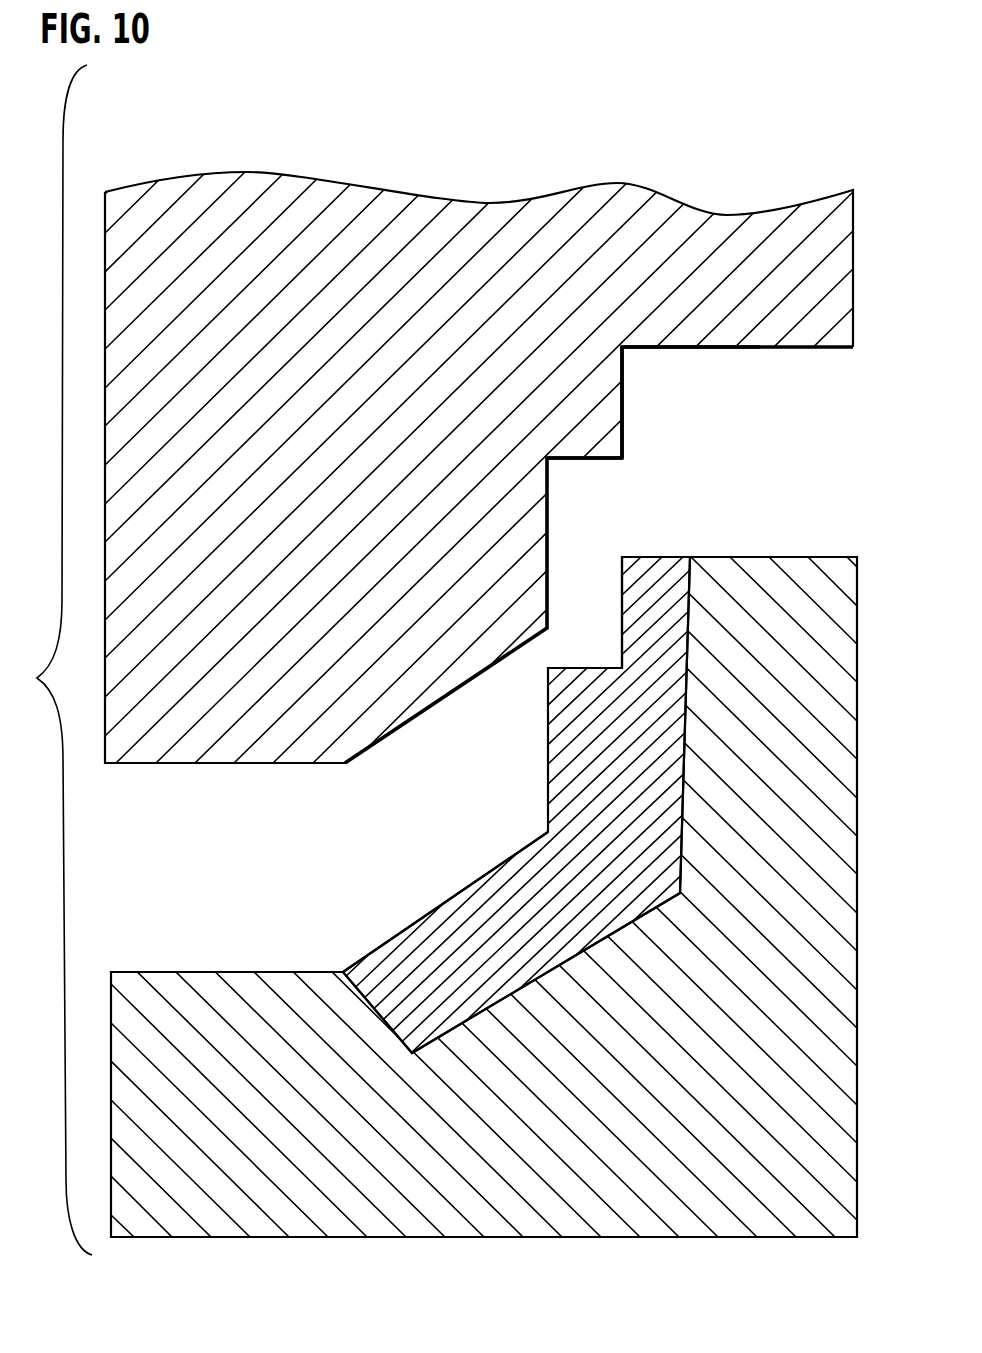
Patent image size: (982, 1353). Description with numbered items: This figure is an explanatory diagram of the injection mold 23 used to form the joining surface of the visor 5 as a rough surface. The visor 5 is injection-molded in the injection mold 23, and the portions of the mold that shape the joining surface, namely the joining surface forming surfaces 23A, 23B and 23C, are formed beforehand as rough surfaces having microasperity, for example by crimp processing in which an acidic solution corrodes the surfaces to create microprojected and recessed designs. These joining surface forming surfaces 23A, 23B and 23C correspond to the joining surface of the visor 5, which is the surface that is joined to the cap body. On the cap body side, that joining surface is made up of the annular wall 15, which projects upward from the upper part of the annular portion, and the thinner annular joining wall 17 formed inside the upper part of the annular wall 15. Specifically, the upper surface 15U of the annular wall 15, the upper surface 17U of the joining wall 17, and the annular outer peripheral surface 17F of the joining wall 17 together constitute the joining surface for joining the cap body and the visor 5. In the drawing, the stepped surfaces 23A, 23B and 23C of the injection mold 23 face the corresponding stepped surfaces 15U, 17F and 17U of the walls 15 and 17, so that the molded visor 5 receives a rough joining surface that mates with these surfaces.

The injection mold 23 is at (551, 154).
The joining surface forming surface 23A is at (633, 355).
The joining surface forming surface 23B is at (632, 403).
The joining surface forming surface 23C is at (553, 467).
The joining wall 17 is at (484, 897).
The upper surface of the joining wall 17U is at (662, 557).
The annular outer peripheral surface of the joining wall 17F is at (623, 605).
The annular wall 15 is at (553, 777).
The upper surface of the annular wall 15U is at (572, 665).
The visor 5 is at (478, 892).